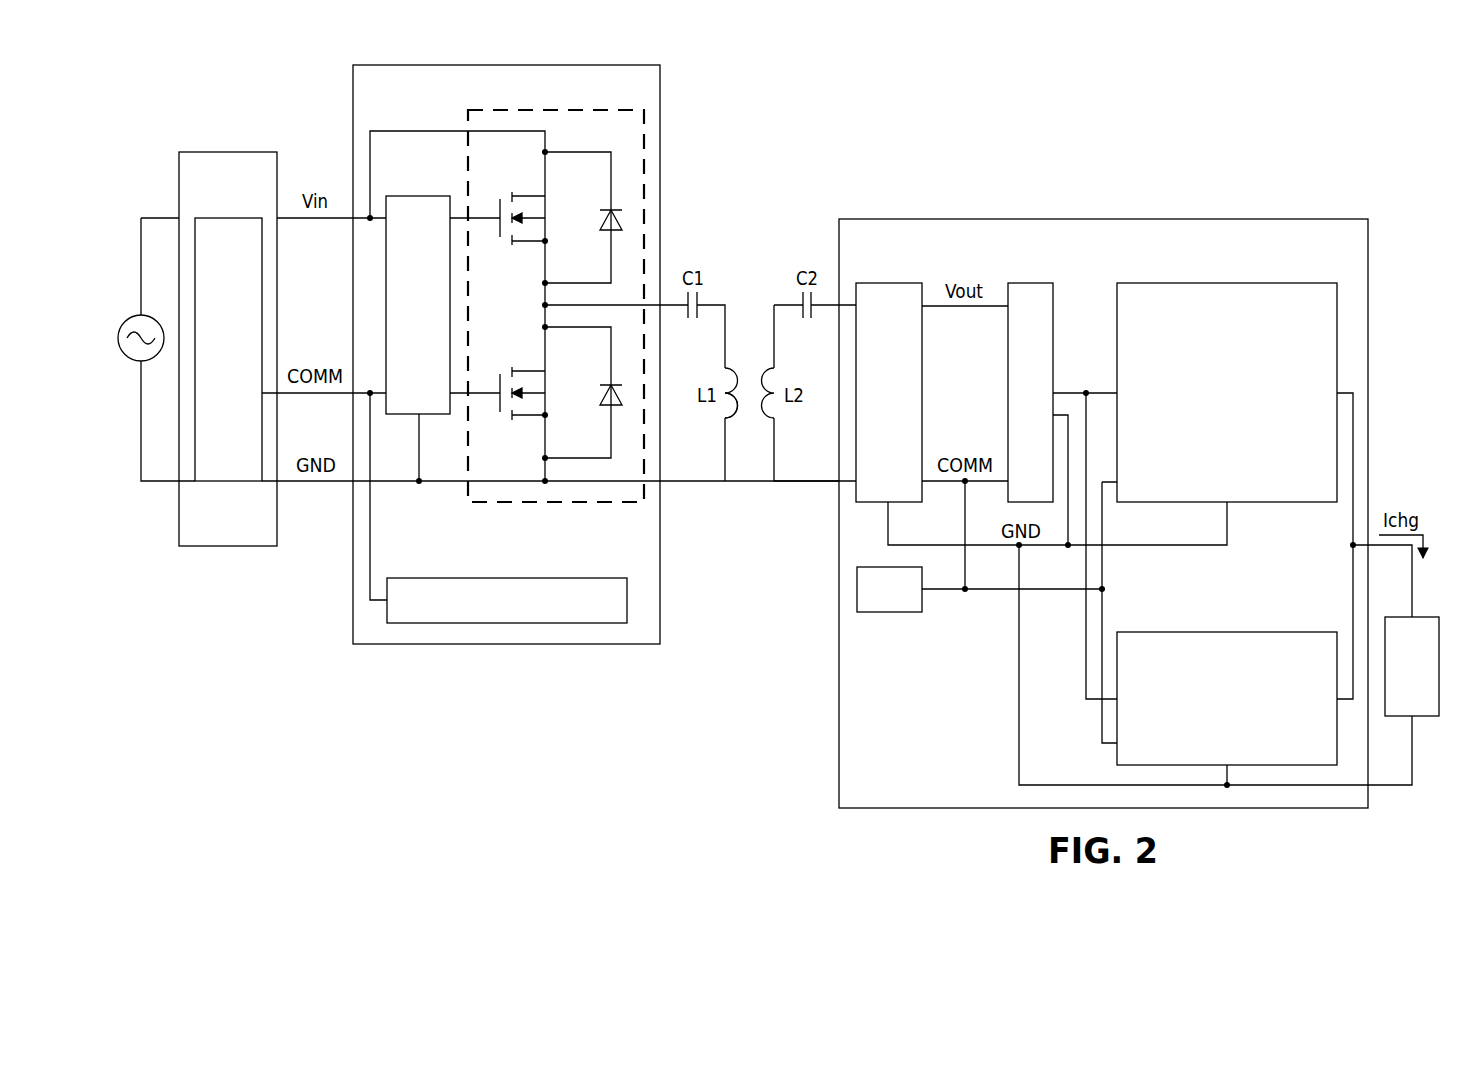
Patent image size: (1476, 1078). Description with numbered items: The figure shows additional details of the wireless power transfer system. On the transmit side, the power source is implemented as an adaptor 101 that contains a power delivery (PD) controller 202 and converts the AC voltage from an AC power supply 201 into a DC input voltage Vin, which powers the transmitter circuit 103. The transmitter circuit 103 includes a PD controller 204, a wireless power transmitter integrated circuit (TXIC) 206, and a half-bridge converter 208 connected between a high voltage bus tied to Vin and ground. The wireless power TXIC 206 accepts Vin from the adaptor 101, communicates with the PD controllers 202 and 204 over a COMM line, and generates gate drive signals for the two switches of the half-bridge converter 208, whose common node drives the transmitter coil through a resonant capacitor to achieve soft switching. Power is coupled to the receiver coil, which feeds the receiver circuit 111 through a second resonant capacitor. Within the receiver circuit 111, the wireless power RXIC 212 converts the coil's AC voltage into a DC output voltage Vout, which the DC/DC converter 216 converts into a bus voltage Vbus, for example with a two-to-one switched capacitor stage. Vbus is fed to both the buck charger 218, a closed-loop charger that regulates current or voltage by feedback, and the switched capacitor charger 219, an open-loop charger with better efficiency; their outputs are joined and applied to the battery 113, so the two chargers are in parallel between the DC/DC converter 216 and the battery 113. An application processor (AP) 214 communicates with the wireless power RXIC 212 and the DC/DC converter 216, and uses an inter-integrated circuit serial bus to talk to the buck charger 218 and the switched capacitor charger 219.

The adaptor 101 is at (228, 152).
The AC power supply 201 is at (134, 319).
The power delivery (PD) controller 202 is at (228, 482).
The transmitter circuit 103 is at (484, 62).
The wireless power transmitter integrated circuit (TXIC) 206 is at (418, 196).
The PD controller 204 is at (505, 578).
The half-bridge converter 208 is at (584, 506).
The receiver circuit 111 is at (1152, 216).
The wireless power receiver integrated circuit (RXIC) 212 is at (923, 400).
The DC/DC converter 216 is at (1007, 372).
The buck charger 218 is at (1263, 503).
The switched capacitor charger 219 is at (1263, 632).
The application processor (AP) 214 is at (886, 613).
The battery 113 is at (1428, 717).